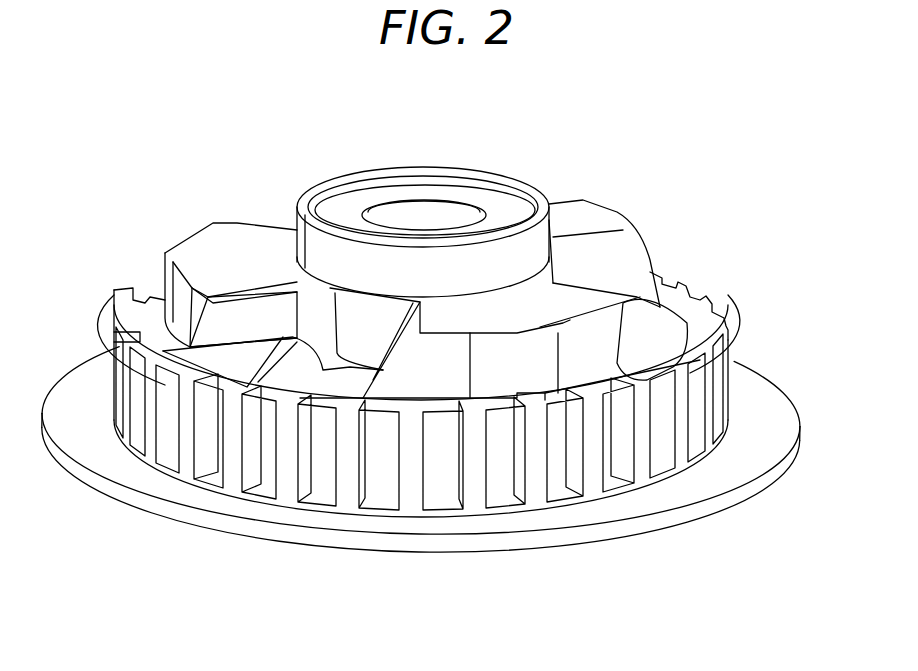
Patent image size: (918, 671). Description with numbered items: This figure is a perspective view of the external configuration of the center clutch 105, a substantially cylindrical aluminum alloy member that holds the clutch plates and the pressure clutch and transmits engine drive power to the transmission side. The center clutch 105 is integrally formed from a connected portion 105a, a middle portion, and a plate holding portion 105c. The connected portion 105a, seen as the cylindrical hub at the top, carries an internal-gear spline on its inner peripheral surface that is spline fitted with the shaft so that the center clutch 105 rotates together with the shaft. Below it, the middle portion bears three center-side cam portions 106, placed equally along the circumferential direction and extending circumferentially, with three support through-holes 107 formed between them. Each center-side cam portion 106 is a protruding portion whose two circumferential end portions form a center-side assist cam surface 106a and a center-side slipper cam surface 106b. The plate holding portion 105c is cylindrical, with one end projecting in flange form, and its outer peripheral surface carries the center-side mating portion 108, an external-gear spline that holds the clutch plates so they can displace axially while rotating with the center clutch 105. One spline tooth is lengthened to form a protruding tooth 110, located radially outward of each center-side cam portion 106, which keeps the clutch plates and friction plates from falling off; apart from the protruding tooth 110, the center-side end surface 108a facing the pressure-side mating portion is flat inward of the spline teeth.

The center clutch 105 is at (128, 102).
The connected portion 105a is at (563, 203).
The plate holding portion 105c is at (463, 545).
The center-side cam portion 106 is at (192, 243).
The center-side assist cam surface 106a is at (250, 317).
The center-side slipper cam surface 106b is at (617, 256).
The support through-hole 107 is at (307, 186).
The center-side mating portion 108 is at (727, 357).
The center-side end surface 108a is at (697, 320).
The protruding tooth 110 is at (537, 448).